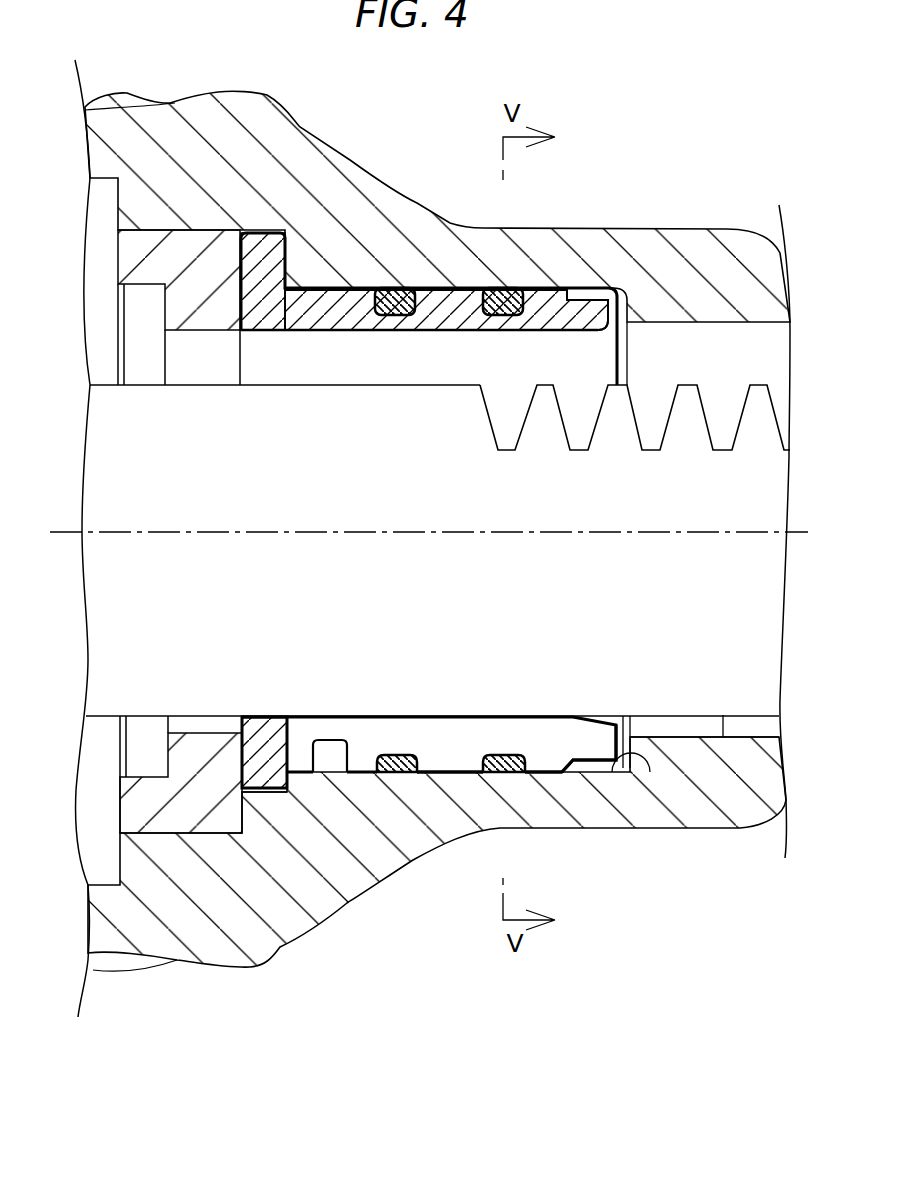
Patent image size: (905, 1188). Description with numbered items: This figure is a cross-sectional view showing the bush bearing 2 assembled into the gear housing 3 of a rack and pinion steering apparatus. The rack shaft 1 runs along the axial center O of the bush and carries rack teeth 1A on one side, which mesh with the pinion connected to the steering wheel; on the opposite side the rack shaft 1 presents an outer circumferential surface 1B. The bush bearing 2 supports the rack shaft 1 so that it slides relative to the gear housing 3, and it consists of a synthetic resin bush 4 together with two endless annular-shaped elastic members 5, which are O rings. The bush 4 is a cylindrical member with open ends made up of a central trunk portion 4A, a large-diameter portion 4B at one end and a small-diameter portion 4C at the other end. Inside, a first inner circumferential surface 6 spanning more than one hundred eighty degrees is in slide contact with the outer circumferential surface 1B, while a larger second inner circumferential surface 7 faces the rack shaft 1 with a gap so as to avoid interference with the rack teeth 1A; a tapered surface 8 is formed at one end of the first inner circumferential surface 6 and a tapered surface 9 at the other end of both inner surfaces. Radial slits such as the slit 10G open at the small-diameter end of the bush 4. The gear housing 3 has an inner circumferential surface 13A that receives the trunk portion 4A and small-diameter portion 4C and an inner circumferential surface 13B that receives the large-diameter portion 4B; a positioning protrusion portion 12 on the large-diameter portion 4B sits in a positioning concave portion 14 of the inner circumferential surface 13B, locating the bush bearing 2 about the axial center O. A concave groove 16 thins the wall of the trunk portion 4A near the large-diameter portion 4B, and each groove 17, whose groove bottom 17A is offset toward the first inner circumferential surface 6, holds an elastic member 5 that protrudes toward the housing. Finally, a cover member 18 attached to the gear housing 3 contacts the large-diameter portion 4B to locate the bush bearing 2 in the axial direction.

The rack shaft 1 is at (120, 617).
The rack teeth 1A is at (686, 402).
The outer circumferential surface 1B is at (727, 753).
The bush bearing 2 is at (585, 288).
The gear housing 3 is at (713, 260).
The bush 4 is at (395, 290).
The trunk portion 4A is at (453, 773).
The large-diameter portion 4B is at (247, 792).
The small-diameter portion 4C is at (600, 757).
The endless annular-shaped elastic member 5 is at (395, 288).
The first inner circumferential surface 6 is at (543, 760).
The second inner circumferential surface 7 is at (437, 342).
The tapered surface 8 is at (240, 717).
The tapered surface 9 is at (605, 328).
The slit 10G is at (565, 747).
The positioning protrusion portion 12 is at (256, 233).
The inner circumferential surface 13A is at (643, 770).
The inner circumferential surface 13B is at (238, 776).
The positioning concave portion 14 is at (337, 283).
The concave groove 16 is at (318, 773).
The groove 17 is at (402, 777).
The groove bottom 17A is at (390, 774).
The cover member 18 is at (127, 255).
The axial center of the bush O is at (296, 530).